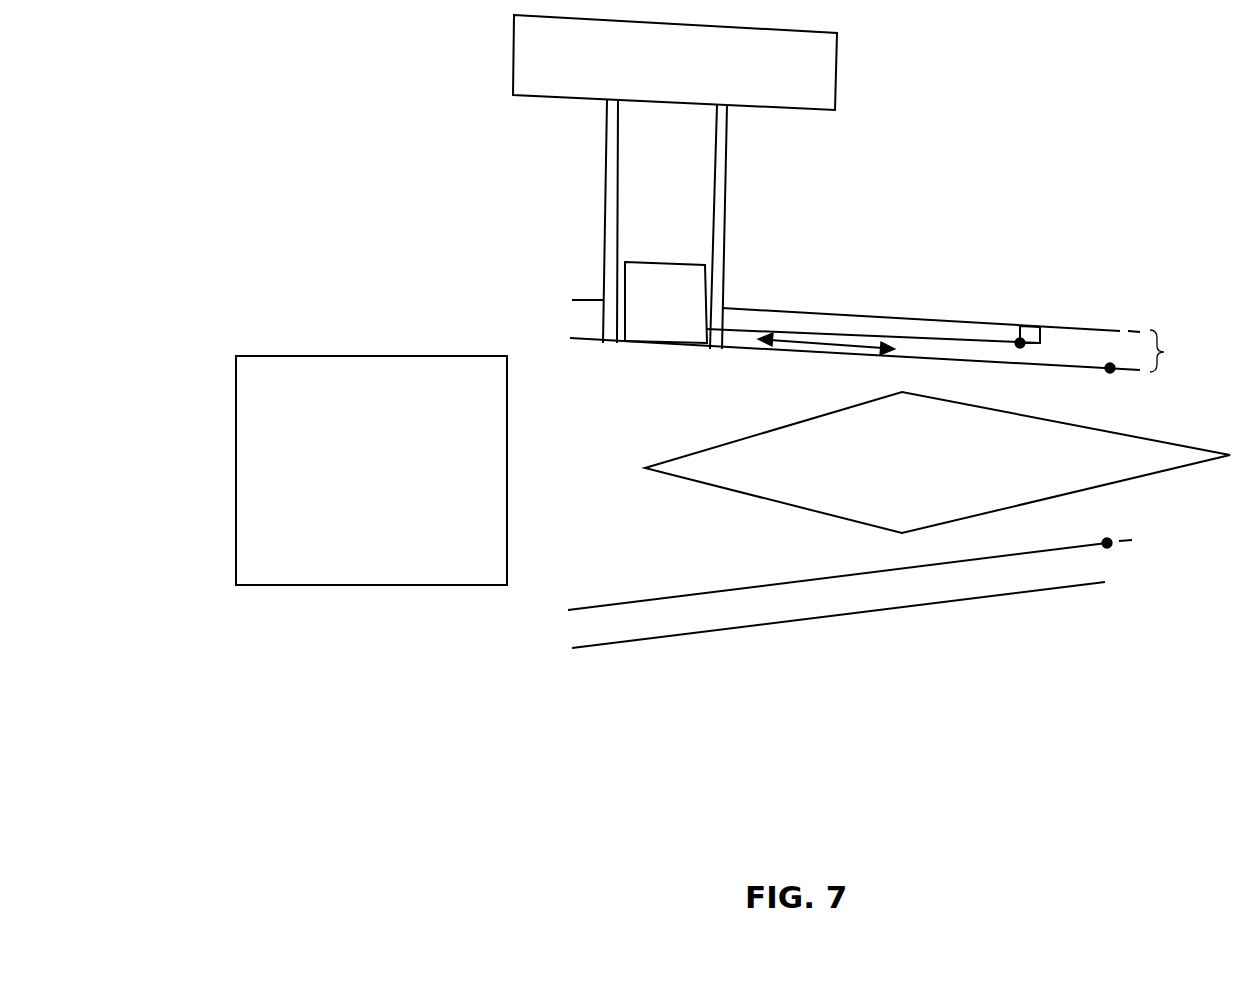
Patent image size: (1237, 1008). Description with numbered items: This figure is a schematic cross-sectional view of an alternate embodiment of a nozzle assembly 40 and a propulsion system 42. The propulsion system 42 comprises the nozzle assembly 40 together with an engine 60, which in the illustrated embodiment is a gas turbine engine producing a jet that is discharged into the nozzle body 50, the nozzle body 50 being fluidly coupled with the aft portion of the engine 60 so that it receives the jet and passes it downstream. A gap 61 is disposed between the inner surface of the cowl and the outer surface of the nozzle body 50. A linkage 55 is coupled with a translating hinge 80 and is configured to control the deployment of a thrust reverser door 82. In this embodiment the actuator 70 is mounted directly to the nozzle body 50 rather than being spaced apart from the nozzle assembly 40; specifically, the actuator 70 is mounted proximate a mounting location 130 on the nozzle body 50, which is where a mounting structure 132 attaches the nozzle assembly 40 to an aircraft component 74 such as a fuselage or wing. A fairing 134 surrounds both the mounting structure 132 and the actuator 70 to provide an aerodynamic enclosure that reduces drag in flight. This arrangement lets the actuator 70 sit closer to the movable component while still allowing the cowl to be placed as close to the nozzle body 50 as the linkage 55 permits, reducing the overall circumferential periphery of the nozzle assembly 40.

The aircraft component 74 is at (837, 85).
The fairing 134 is at (606, 143).
The mounting structure 132 is at (713, 173).
The actuator 70 is at (685, 262).
The thrust reverser door 82 is at (598, 300).
The linkage 55 is at (742, 330).
The nozzle body 50 is at (585, 340).
The translating hinge 80 is at (1043, 332).
The gap 61 is at (1164, 352).
The engine 60 is at (356, 585).
The mounting location 130 is at (722, 348).
The nozzle assembly 40 is at (1232, 658).
The propulsion system 42 is at (1232, 743).